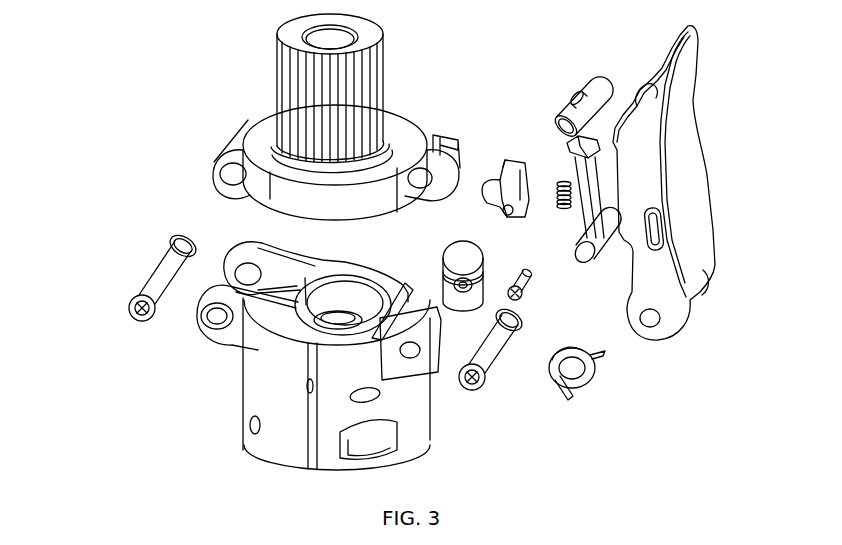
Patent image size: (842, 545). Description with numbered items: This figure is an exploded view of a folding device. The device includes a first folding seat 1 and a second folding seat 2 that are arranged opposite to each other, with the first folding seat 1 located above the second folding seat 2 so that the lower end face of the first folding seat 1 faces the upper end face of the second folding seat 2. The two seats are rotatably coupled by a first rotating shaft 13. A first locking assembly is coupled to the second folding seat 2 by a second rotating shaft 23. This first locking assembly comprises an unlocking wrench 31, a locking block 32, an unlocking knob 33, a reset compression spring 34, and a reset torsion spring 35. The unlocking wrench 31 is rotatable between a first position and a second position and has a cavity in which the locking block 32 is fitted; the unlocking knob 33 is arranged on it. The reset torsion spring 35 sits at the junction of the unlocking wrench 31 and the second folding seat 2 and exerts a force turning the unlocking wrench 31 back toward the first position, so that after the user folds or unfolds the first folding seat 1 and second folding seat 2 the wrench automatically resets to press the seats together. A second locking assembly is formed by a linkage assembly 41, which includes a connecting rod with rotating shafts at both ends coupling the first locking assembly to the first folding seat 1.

The first folding seat 1 is at (262, 113).
The second folding seat 2 is at (252, 412).
The first rotating shaft 13 is at (135, 312).
The second rotating shaft 23 is at (477, 383).
The unlocking wrench 31 is at (693, 202).
The locking block 32 is at (505, 160).
The unlocking knob 33 is at (447, 257).
The reset compression spring 34 is at (557, 180).
The reset torsion spring 35 is at (565, 387).
The linkage assembly 41 is at (597, 88).